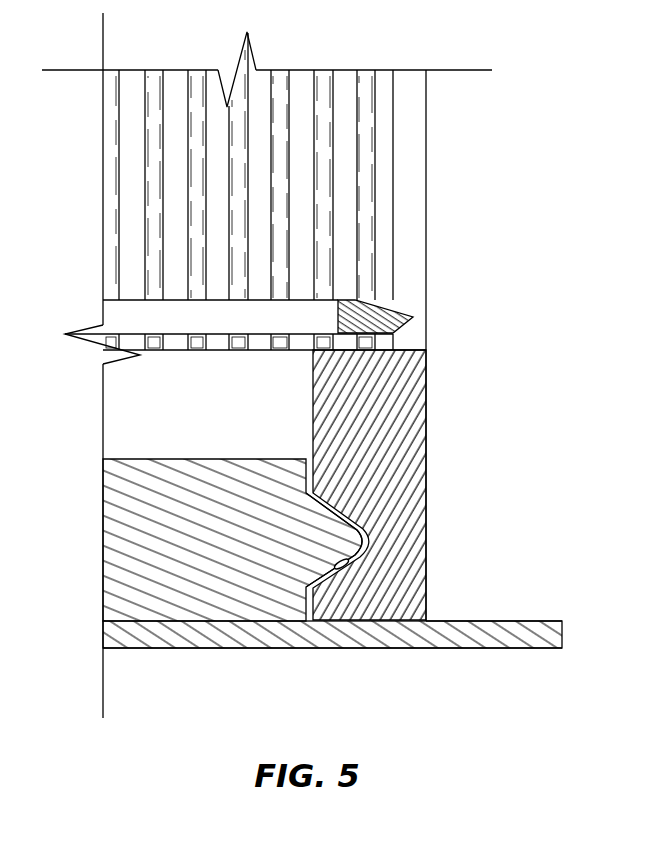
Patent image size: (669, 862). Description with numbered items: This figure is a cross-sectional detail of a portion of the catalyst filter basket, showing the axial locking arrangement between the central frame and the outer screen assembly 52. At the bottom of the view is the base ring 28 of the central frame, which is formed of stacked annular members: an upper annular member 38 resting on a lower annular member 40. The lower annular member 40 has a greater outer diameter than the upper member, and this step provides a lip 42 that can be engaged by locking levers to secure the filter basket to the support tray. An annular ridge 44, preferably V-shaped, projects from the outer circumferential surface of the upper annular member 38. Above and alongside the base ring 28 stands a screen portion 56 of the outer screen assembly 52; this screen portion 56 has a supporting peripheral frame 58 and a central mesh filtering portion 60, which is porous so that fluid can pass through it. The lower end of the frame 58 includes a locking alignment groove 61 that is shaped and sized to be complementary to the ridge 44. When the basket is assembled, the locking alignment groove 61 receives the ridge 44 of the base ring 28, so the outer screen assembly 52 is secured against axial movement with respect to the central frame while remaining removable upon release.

The base ring 28 is at (125, 658).
The upper annular member 38 is at (178, 600).
The lower annular member 40 is at (377, 640).
The lip 42 is at (508, 620).
The annular ridge 44 is at (345, 535).
The outer screen assembly 52 is at (434, 117).
The screen portion 56 is at (427, 168).
The supporting peripheral frame 58 is at (397, 374).
The central mesh filtering portion 60 is at (303, 85).
The locking alignment groove 61 is at (337, 562).